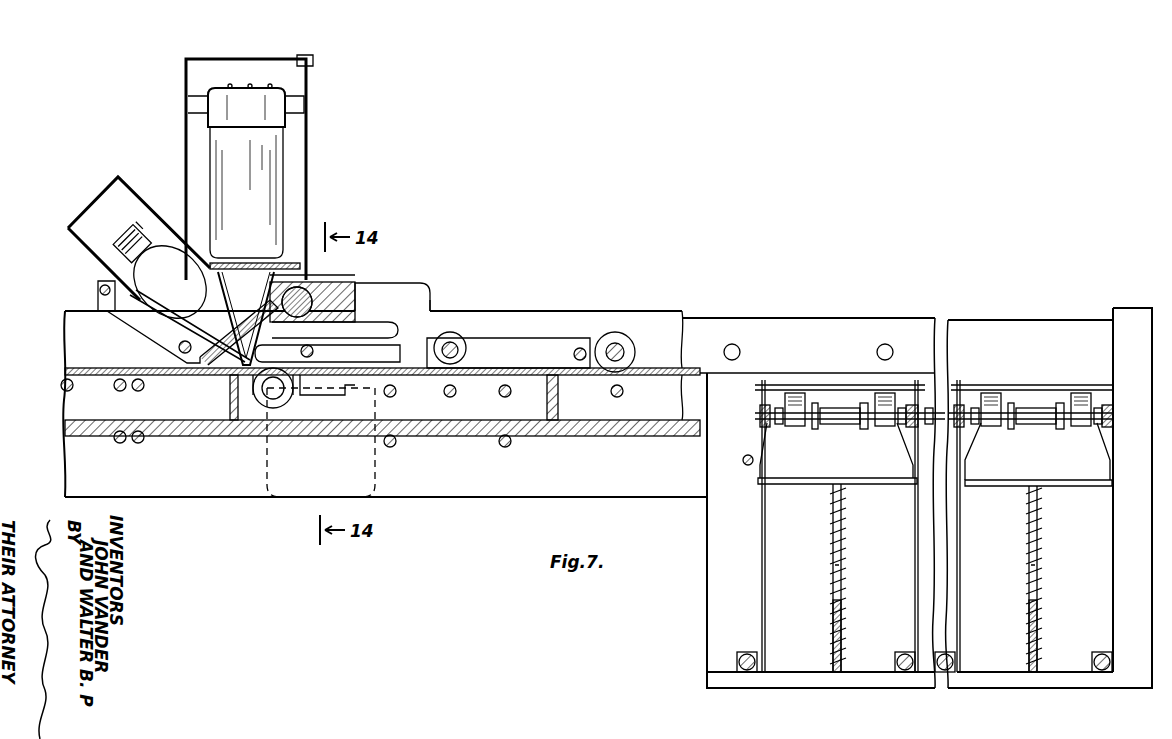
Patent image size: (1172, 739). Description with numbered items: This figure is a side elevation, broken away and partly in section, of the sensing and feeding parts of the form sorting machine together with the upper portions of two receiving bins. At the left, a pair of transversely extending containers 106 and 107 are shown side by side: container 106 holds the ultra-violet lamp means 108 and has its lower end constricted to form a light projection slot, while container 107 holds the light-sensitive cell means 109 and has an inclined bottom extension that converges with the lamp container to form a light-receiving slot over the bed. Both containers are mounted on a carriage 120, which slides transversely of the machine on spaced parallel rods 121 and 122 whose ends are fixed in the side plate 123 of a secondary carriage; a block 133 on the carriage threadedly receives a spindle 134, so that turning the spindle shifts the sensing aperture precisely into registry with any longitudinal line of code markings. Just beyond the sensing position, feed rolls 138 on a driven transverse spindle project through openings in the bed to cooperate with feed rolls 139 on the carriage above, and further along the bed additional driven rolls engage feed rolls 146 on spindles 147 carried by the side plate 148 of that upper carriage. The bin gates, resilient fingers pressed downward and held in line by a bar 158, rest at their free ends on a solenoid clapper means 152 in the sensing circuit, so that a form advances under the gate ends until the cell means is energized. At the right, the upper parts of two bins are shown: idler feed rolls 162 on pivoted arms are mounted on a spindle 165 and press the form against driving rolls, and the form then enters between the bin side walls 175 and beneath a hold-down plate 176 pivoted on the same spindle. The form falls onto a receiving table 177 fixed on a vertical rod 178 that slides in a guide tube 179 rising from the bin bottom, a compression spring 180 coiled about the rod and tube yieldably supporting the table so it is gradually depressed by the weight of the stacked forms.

The container 106 is at (130, 198).
The container 107 is at (308, 150).
The ultra-violet lamp means 108 is at (168, 302).
The light-sensitive cell means 109 is at (281, 207).
The carriage 120 is at (322, 283).
The rod 121 is at (392, 296).
The rod 122 is at (98, 290).
The side plate 123 is at (425, 297).
The block 133 is at (370, 332).
The spindle 134 is at (312, 302).
The feed rolls 138 is at (265, 404).
The feed rolls 139 is at (254, 322).
The feed rolls 146 is at (457, 339).
The spindles 147 is at (458, 352).
The side plate 148 is at (520, 322).
The solenoid clapper means 152 is at (332, 387).
The bar 158 is at (545, 340).
The idler feed rolls 162 is at (795, 388).
The spindle 165 is at (847, 412).
The bin side walls 175 is at (758, 545).
The hold-down plate 176 is at (780, 463).
The receiving table 177 is at (800, 486).
The vertical rod 178 is at (843, 561).
The guide tube 179 is at (845, 633).
The compression spring 180 is at (835, 566).